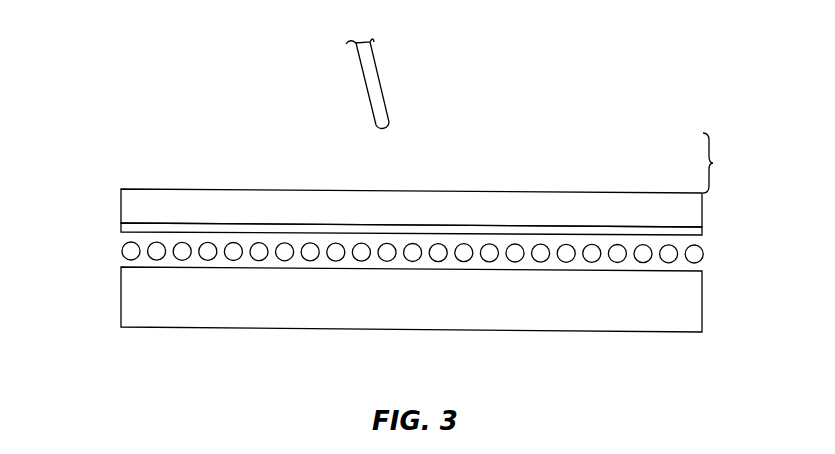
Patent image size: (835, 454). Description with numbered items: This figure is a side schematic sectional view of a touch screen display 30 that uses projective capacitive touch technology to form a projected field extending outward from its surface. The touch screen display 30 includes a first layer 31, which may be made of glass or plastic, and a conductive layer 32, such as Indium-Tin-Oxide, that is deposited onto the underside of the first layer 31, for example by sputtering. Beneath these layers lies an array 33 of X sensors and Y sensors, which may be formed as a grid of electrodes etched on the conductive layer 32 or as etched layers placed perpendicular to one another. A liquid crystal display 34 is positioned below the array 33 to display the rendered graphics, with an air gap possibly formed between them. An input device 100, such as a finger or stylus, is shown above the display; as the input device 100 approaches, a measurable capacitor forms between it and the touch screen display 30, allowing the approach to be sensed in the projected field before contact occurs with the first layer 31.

The touch screen display 30 is at (87, 200).
The first layer 31 is at (703, 210).
The conductive layer 32 is at (703, 230).
The array of X sensors and Y sensors 33 is at (703, 254).
The liquid crystal display 34 is at (703, 297).
The input device 100 is at (380, 105).